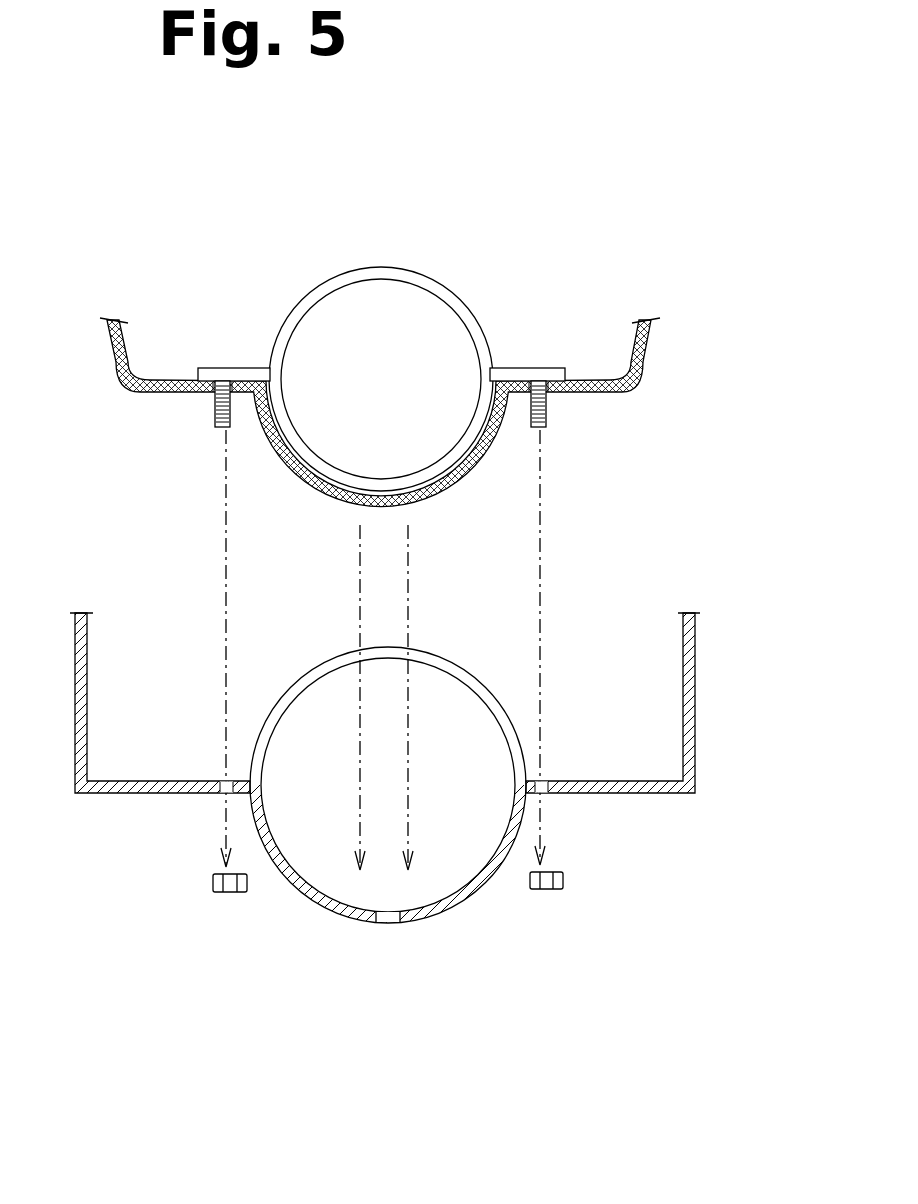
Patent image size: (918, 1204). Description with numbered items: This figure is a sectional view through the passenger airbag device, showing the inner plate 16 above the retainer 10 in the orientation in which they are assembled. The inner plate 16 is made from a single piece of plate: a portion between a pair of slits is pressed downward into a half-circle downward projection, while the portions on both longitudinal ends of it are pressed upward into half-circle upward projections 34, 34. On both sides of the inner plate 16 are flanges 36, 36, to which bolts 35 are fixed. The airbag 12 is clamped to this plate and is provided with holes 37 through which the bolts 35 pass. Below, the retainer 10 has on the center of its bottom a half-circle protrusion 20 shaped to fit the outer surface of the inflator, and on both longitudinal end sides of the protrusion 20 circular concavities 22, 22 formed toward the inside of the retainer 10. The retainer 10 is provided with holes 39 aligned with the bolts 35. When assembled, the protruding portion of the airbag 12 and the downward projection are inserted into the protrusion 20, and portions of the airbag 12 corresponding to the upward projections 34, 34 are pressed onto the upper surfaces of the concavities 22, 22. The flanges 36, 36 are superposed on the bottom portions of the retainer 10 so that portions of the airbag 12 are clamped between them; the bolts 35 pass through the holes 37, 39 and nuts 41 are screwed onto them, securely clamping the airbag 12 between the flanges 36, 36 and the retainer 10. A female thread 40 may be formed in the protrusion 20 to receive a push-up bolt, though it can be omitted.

The retainer 10 is at (698, 688).
The airbag 12 is at (643, 376).
The inner plate 16 is at (448, 273).
The protrusion 20 is at (490, 882).
The concavity 22 is at (305, 690).
The upward projection 34 is at (312, 288).
The bolt 35 is at (233, 413).
The flange 36 is at (228, 368).
The hole 37 is at (210, 392).
The hole 39 is at (222, 797).
The female thread 40 is at (387, 925).
The nut 41 is at (213, 884).